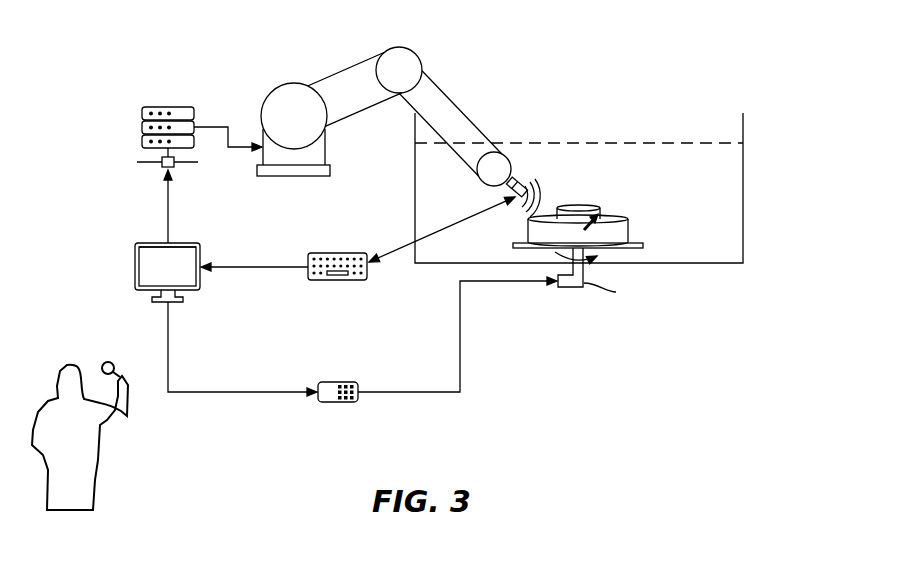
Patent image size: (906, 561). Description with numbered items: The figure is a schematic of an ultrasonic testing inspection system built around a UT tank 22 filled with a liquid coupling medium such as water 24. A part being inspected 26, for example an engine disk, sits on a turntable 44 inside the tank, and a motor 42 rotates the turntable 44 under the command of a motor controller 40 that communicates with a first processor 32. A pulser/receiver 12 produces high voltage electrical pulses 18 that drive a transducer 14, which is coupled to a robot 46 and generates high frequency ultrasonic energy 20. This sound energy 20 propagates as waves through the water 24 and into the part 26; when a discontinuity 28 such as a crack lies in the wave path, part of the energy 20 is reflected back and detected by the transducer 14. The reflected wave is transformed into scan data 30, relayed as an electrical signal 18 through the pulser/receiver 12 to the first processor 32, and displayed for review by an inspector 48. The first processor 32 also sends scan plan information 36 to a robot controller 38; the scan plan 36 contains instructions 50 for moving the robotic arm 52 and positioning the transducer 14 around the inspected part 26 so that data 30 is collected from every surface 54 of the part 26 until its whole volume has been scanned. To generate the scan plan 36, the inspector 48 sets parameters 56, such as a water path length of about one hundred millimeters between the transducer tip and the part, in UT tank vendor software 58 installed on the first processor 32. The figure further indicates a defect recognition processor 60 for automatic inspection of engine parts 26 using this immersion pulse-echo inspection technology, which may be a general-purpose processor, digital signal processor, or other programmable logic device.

The pulser/receiver 12 is at (351, 281).
The transducer 14 is at (523, 181).
The electrical pulses 18 is at (465, 219).
The ultrasonic energy 20 is at (553, 188).
The UT tank 22 is at (744, 188).
The water 24 is at (693, 190).
The part being inspected 26 is at (583, 207).
The discontinuity 28 is at (601, 218).
The scan data 30 is at (276, 266).
The first processor 32 is at (179, 283).
The scan plan information 36 is at (167, 200).
The robot controller 38 is at (172, 106).
The motor controller 40 is at (328, 403).
The motor 42 is at (571, 288).
The turntable 44 is at (644, 245).
The robot 46 is at (330, 76).
The inspector 48 is at (139, 413).
The instructions 50 is at (222, 126).
The robotic arm 52 is at (441, 88).
The surface 54 is at (537, 234).
The parameters 56 is at (136, 246).
The UT tank vendor software 58 is at (140, 262).
The processor 60 is at (188, 250).